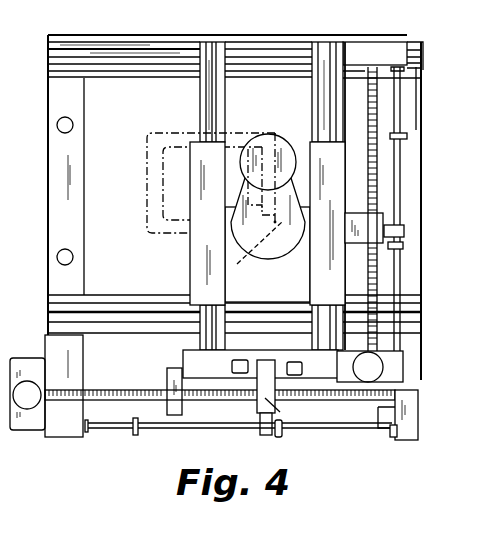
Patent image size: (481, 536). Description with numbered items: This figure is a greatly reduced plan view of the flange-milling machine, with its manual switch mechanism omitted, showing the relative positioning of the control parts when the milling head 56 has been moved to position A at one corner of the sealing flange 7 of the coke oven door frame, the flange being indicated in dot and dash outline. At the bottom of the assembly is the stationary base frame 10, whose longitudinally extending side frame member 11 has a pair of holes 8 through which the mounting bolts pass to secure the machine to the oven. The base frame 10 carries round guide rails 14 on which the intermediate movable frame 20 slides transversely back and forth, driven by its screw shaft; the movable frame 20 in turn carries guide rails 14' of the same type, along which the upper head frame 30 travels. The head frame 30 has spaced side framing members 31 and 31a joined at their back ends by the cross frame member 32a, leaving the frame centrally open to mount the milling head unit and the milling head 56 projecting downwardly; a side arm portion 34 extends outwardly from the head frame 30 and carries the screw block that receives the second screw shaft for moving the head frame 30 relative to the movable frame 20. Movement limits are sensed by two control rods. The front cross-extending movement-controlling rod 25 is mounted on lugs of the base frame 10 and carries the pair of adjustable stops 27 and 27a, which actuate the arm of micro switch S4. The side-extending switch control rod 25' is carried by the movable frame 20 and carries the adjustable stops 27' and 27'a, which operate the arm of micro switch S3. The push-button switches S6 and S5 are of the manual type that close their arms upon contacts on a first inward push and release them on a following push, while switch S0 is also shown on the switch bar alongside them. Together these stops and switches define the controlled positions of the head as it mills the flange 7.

The base frame 10 is at (46, 102).
The guide rail 14 is at (180, 162).
The guide rail 14' is at (249, 196).
The holes 8 is at (60, 132).
The side frame member 11 is at (58, 272).
The sealing flange 7 is at (148, 178).
The head frame 30 is at (188, 203).
The side framing member 31 is at (192, 255).
The side framing member 31a is at (317, 276).
The cross frame member 32a is at (297, 143).
The position A is at (284, 230).
The milling head 56 is at (257, 256).
The side arm portion 34 is at (376, 222).
The switch control rod 25' is at (426, 209).
The adjustable stop 27'a is at (430, 142).
The micro switch S3 is at (407, 230).
The adjustable stop 27' is at (423, 258).
The movable frame 20 is at (183, 356).
The push-button switch S6 is at (232, 366).
The push-button switch S5 is at (306, 368).
The limit switch S0 is at (268, 397).
The micro switch S4 is at (260, 437).
The movement-controlling rod 25 is at (251, 431).
The adjustable stop 27 is at (112, 442).
The adjustable stop 27a is at (281, 438).